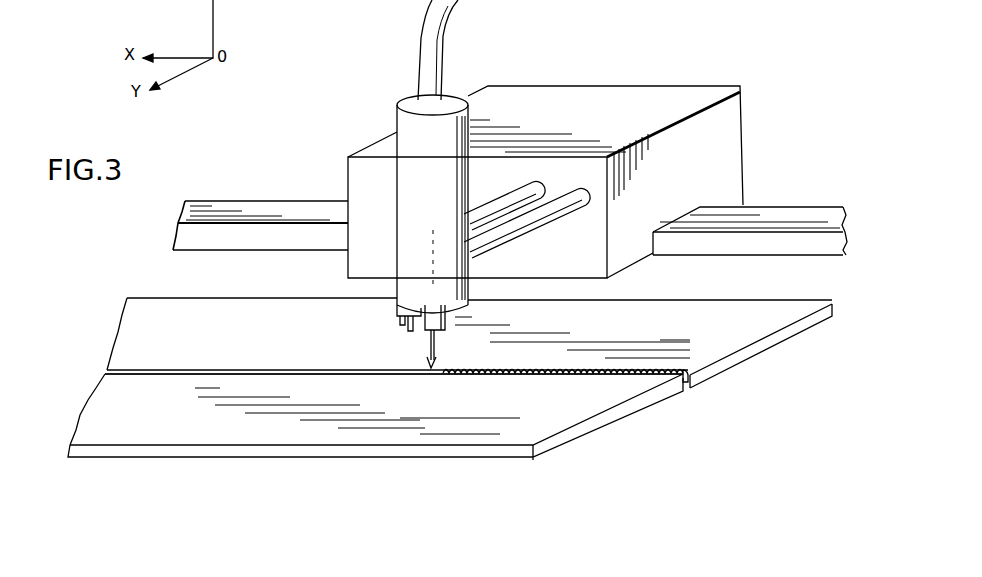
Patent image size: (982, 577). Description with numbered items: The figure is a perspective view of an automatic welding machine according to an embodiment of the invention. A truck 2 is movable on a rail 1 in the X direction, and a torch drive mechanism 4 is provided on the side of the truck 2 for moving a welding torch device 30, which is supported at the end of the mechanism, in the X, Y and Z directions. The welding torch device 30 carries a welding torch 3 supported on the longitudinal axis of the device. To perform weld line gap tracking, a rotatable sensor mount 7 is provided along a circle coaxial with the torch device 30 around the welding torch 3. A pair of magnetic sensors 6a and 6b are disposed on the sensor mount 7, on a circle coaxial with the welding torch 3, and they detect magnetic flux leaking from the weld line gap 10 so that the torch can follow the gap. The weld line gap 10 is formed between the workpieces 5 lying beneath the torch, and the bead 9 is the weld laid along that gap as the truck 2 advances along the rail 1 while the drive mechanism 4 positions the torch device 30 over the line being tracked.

The rail 1 is at (769, 216).
The truck 2 is at (541, 107).
The welding torch 3 is at (447, 326).
The torch drive mechanism 4 is at (536, 220).
The workpiece plates 5 is at (731, 338).
The magnetic sensor 6a is at (397, 329).
The magnetic sensor 6b is at (413, 331).
The sensor mount 7 is at (396, 314).
The weld bead 9 is at (565, 374).
The weld line gap 10 is at (363, 375).
The welding torch device 30 is at (406, 262).